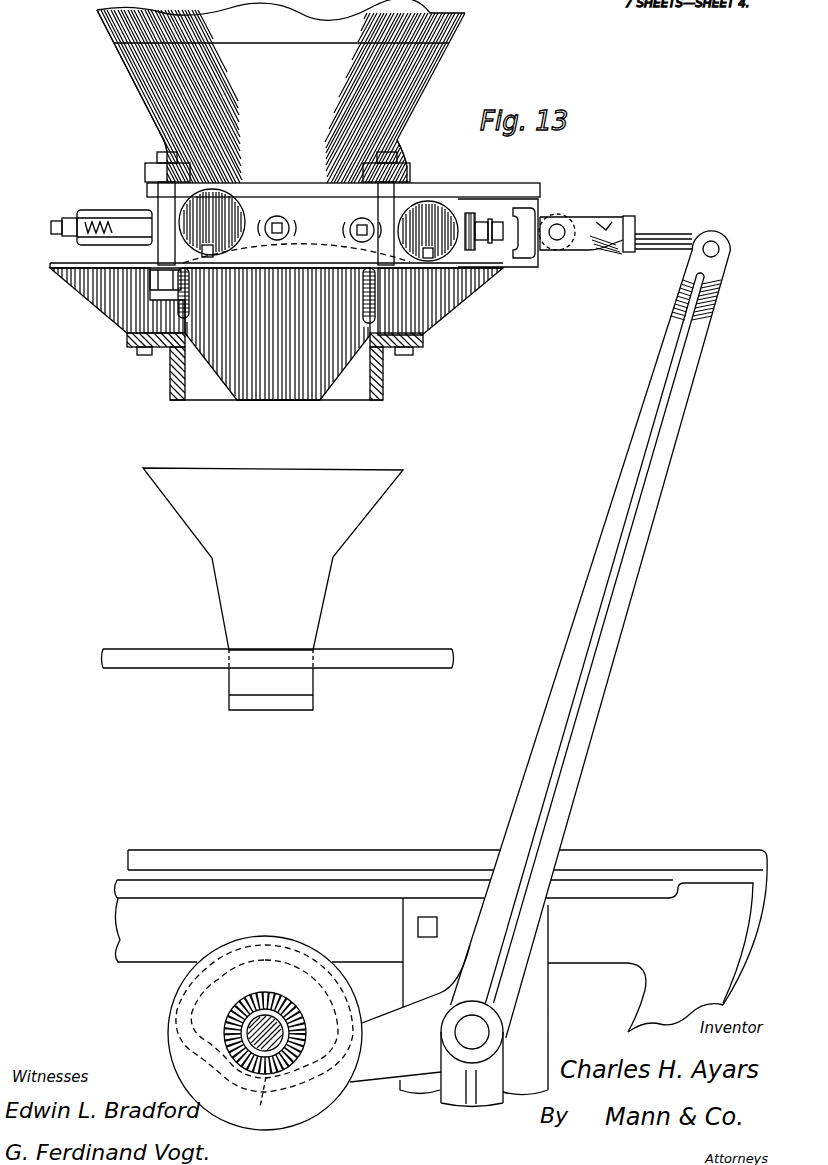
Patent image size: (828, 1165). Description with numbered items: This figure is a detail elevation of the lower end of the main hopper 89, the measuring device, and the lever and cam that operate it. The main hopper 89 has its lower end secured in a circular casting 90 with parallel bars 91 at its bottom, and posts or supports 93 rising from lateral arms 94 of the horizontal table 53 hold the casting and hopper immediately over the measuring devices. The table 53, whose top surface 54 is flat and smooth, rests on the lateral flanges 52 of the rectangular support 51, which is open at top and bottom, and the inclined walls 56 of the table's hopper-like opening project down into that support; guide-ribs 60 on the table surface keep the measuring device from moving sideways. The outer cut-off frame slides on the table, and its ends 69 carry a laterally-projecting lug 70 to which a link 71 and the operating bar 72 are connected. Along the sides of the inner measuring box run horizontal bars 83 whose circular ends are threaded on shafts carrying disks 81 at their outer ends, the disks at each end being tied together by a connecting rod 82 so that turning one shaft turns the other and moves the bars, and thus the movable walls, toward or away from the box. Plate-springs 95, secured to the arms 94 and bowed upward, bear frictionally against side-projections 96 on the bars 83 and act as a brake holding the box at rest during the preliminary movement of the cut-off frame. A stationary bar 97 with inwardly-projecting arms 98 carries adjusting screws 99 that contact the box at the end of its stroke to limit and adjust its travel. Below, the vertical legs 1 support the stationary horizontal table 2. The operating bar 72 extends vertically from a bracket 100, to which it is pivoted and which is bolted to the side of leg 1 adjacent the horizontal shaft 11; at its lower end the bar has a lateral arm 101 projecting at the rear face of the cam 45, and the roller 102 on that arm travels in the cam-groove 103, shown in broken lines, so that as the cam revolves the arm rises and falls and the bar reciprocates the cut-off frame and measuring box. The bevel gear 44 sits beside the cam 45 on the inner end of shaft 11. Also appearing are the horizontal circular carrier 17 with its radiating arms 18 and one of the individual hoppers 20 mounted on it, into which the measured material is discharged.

The vertical legs or supports 1 is at (441, 976).
The stationary horizontal table 2 is at (382, 857).
The horizontal shaft 11 is at (266, 1026).
The horizontal circular carrier 17 is at (440, 662).
The arms 18 is at (150, 125).
The individual hoppers 20 is at (273, 589).
The bevel gear 44 is at (250, 1010).
The cam (clutch-wheel) 45 is at (265, 1033).
The rectangular support 51 is at (170, 384).
The lateral flanges 52 is at (425, 345).
The horizontal table 53 is at (95, 282).
The top surface 54 is at (75, 265).
The inclined walls 56 is at (312, 382).
The guide-ribs 60 is at (150, 280).
The ends of the outer frame 69 is at (538, 210).
The laterally-projecting lug 70 is at (547, 255).
The link 71 is at (600, 226).
The operating bar 72 is at (650, 428).
The circular plate or disk 81 is at (212, 223).
The connecting rod or bar 82 is at (300, 262).
The horizontal bars 83 is at (320, 230).
The main hopper 89 is at (281, 22).
The circular casting 90 is at (281, 96).
The parallel bars 91 is at (145, 172).
The posts or supports 93 is at (158, 199).
The lateral arms 94 is at (190, 283).
The plate-springs 95 is at (325, 262).
The side-projections 96 is at (279, 216).
The stationary bar 97 is at (98, 212).
The inwardly-projecting arms 98 is at (470, 262).
The adjusting screws 99 is at (60, 228).
The bracket 100 is at (495, 1070).
The lateral arm 101 is at (410, 1013).
The roller 102 is at (273, 1101).
The cam-groove 103 is at (283, 952).